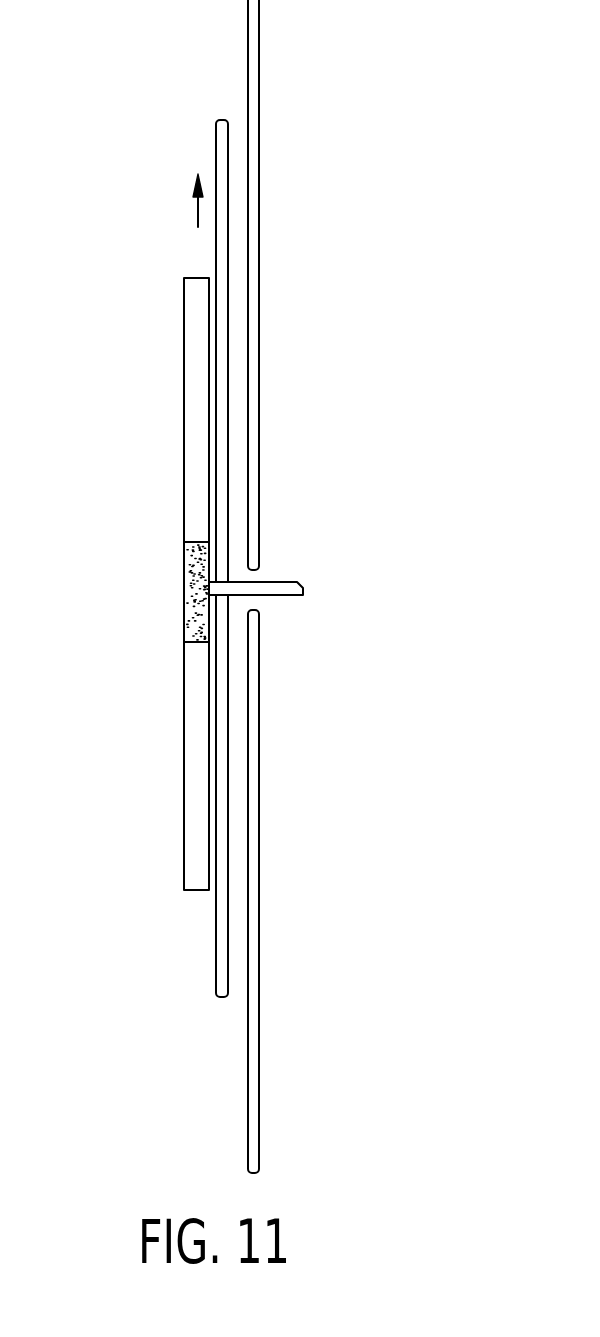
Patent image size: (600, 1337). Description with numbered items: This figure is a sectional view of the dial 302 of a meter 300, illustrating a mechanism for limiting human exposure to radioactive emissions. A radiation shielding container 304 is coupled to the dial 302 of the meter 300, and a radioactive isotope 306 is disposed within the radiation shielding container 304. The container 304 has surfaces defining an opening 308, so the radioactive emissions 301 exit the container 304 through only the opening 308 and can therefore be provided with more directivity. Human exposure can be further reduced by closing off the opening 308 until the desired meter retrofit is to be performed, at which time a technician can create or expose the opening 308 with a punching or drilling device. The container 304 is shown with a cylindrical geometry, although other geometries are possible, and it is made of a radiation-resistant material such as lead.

The meter 300 is at (259, 82).
The radioactive emissions 301 is at (186, 178).
The dial 302 is at (216, 125).
The radiation shielding container 304 is at (186, 372).
The radioactive isotope 306 is at (192, 595).
The opening 308 is at (178, 255).